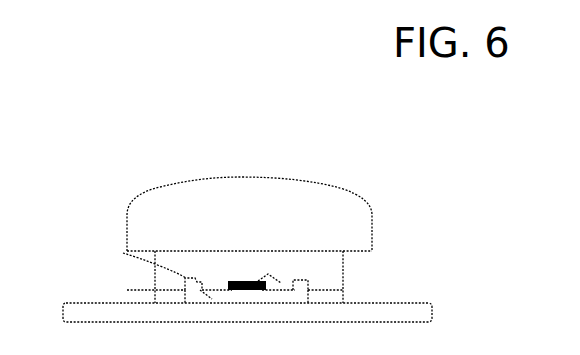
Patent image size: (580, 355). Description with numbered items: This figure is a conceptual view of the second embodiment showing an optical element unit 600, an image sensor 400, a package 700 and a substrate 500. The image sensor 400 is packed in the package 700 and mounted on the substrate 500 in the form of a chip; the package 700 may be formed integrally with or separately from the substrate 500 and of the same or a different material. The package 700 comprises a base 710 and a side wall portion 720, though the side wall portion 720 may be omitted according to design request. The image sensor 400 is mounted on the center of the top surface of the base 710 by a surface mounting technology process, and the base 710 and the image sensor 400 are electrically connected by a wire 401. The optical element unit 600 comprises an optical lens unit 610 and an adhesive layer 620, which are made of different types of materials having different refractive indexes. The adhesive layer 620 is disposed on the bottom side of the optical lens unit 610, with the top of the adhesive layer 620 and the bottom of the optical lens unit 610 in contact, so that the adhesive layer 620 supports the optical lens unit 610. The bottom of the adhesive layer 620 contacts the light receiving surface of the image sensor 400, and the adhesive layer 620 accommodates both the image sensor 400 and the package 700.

The image sensor 400 is at (242, 279).
The wire 401 is at (268, 273).
The substrate 500 is at (422, 311).
The optical element unit 600 is at (306, 231).
The optical lens unit 610 is at (352, 223).
The adhesive layer 620 is at (337, 282).
The package 700 is at (177, 253).
The base 710 is at (127, 288).
The side wall portion 720 is at (123, 253).